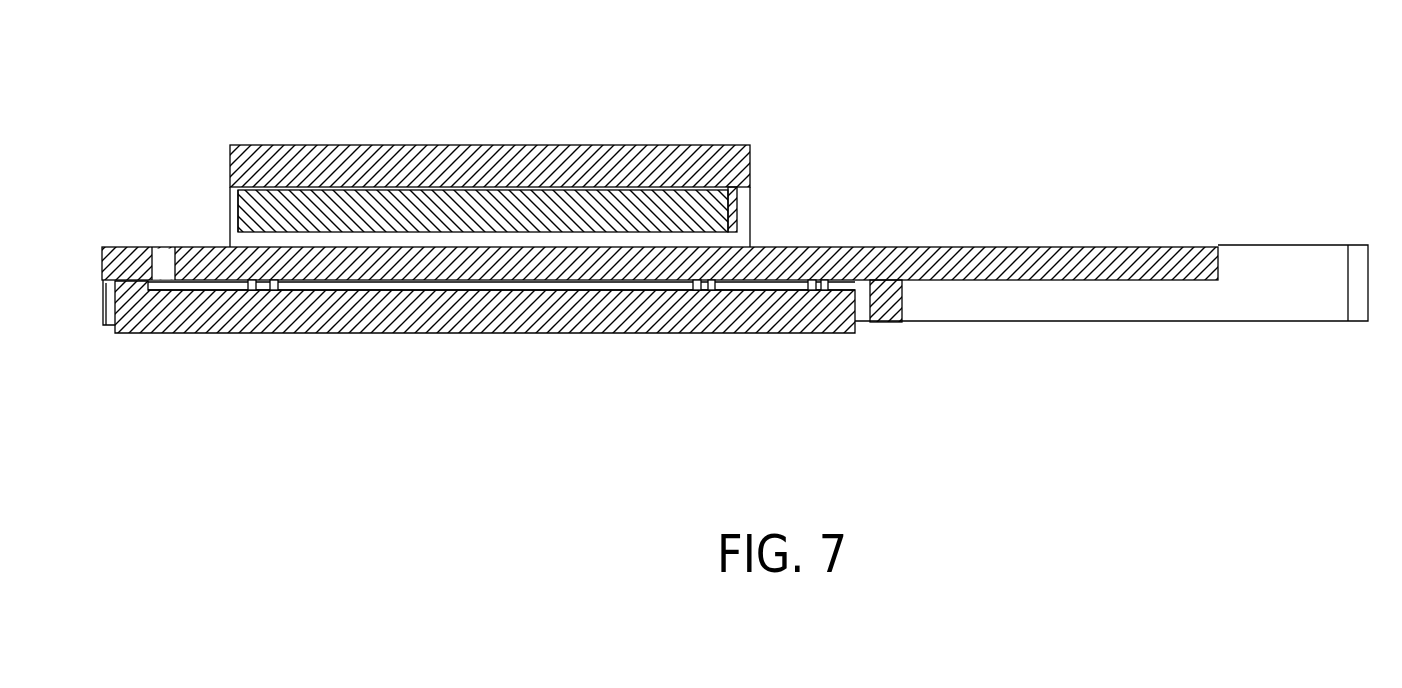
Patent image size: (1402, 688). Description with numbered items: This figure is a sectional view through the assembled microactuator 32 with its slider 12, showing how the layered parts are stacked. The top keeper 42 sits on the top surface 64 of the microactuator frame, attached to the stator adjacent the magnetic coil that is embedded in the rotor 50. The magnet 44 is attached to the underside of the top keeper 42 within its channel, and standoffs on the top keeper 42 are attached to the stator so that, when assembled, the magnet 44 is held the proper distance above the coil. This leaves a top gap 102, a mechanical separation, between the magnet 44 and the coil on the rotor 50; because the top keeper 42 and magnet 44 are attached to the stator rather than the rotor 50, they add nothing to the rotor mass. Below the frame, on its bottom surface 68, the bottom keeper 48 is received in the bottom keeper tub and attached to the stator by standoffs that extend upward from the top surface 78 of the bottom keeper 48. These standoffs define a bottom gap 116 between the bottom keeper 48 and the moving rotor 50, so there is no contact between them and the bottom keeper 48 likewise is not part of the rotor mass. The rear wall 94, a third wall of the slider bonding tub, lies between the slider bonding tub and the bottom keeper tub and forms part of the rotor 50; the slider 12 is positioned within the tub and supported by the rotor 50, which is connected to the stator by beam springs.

The slider 12 is at (1048, 302).
The microactuator 32 is at (424, 147).
The top keeper 42 is at (328, 145).
The magnet 44 is at (437, 210).
The bottom keeper 48 is at (389, 335).
The rotor 50 is at (735, 235).
The top surface 64 is at (548, 247).
The bottom surface 68 is at (617, 282).
The top surface 78 is at (302, 293).
The rear wall 94 is at (893, 318).
The top gap 102 is at (725, 238).
The bottom gap 116 is at (455, 290).